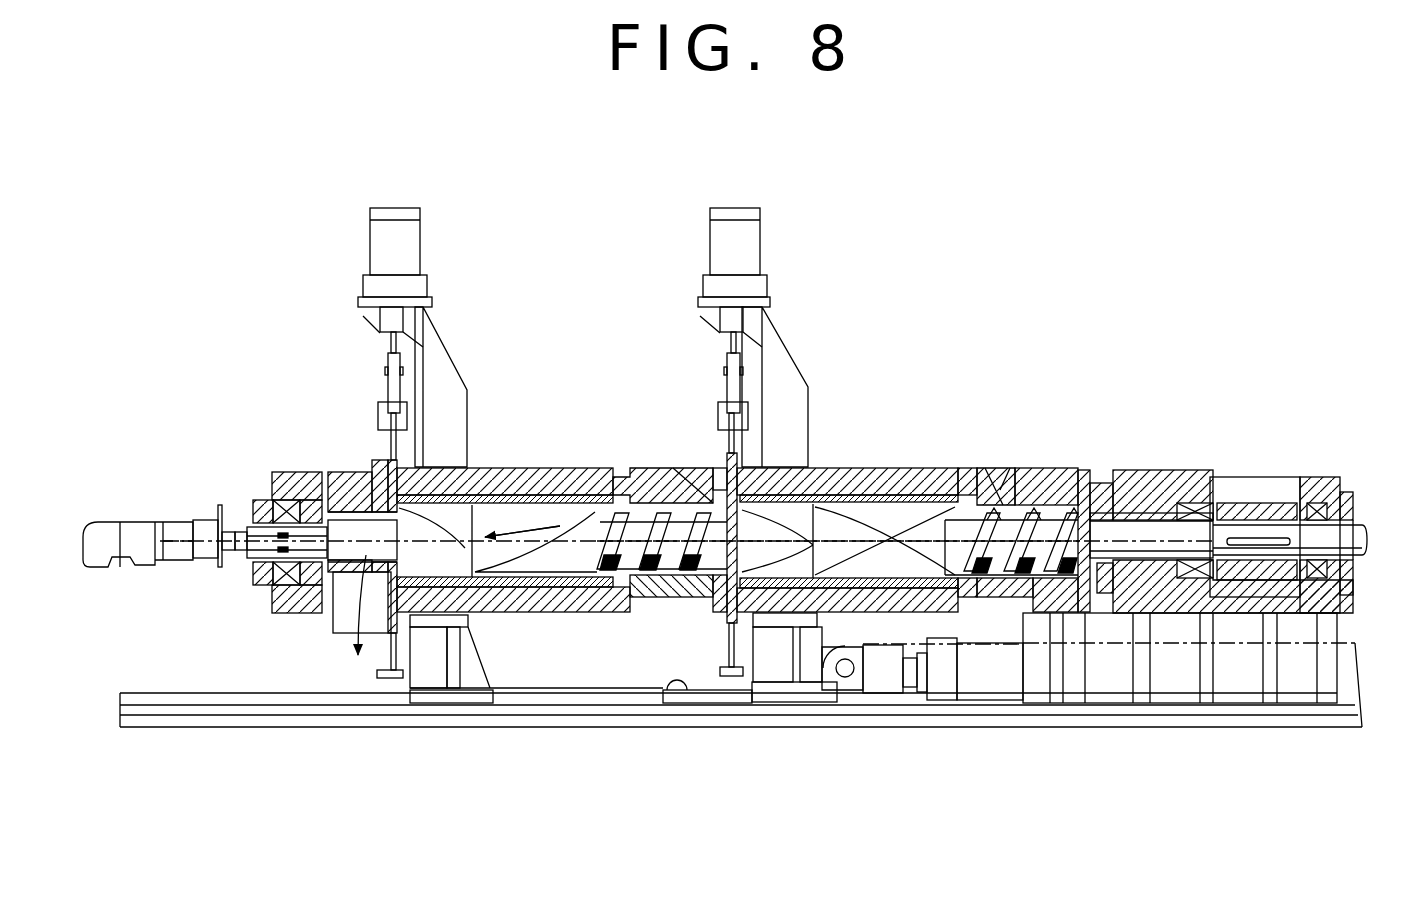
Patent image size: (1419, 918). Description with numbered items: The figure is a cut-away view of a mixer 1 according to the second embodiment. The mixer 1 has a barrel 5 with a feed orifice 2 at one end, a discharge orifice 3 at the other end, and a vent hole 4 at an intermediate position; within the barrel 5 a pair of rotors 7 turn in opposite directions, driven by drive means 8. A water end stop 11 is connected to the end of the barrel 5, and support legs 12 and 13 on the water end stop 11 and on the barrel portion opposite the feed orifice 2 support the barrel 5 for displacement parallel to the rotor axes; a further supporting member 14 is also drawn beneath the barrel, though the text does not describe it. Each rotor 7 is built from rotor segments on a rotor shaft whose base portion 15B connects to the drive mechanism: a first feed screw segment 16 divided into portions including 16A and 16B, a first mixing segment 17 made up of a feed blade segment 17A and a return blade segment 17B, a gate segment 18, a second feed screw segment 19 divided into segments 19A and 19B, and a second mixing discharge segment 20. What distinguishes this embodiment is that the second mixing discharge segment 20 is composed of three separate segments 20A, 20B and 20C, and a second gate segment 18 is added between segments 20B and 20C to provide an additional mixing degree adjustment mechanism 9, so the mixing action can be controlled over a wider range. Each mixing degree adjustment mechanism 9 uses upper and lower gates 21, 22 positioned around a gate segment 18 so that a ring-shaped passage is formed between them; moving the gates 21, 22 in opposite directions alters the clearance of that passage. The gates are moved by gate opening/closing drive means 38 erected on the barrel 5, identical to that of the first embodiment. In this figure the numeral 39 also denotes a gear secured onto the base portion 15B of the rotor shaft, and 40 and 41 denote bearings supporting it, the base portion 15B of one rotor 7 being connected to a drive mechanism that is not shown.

The mixer 1 is at (965, 447).
The feed orifice 2 is at (1062, 483).
The discharge orifice 3 is at (345, 613).
The vent hole 4 is at (685, 472).
The barrel 5 is at (927, 473).
The rotors 7 is at (1135, 500).
The drive means 8 is at (1317, 496).
The mixing degree adjustment mechanism 9 is at (372, 443).
The water end stop 11 is at (282, 484).
The support leg 12 is at (428, 680).
The support leg 13 is at (1037, 670).
The support bracket 14 is at (677, 690).
The base portion 15B is at (1100, 528).
The first feed screw segment 16 is at (1025, 508).
The first feed screw segment portion 16A is at (1052, 527).
The first feed screw segment portion 16B is at (990, 495).
The first mixing segment 17 is at (926, 404).
The feed blade segment 17A is at (867, 523).
The return blade segment 17B is at (800, 523).
The gate segment 18 is at (354, 470).
The second feed screw segment 19 is at (527, 771).
The second feed screw segment portion 19A is at (663, 570).
The second feed screw segment portion 19B is at (613, 570).
The second mixing discharge segment 20 is at (528, 547).
The second mixing discharge segment portion 20A is at (543, 545).
The second mixing discharge segment portion 20B is at (462, 520).
The second mixing discharge segment portion 20C is at (352, 485).
The upper gate 21 is at (430, 467).
The lower gate 22 is at (368, 680).
The gate opening/closing drive means 38 is at (380, 355).
The gear 39 is at (780, 357).
The bearing 40 is at (412, 243).
The bearing 41 is at (1352, 516).